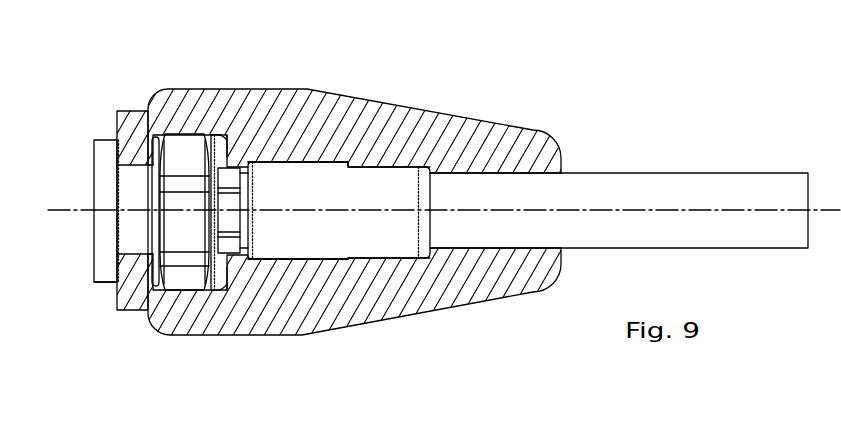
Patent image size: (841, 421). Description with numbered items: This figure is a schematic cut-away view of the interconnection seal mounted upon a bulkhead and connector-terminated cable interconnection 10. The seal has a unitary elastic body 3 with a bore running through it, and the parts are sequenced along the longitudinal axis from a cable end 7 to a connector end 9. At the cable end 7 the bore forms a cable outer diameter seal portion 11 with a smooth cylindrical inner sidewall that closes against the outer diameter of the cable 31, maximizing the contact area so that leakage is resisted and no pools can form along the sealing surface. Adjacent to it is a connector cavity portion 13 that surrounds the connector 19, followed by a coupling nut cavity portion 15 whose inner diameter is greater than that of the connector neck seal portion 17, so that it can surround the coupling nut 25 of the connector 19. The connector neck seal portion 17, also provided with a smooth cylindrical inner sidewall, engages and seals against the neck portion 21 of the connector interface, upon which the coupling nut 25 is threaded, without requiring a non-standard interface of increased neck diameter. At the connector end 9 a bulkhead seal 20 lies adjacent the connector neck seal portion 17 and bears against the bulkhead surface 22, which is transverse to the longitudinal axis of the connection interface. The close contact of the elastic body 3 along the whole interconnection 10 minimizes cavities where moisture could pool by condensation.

The unitary elastic body 3 is at (408, 297).
The cable end 7 is at (588, 157).
The connector end 9 is at (75, 224).
The interconnection 10 is at (178, 212).
The cable outer diameter seal portion 11 is at (498, 170).
The connector cavity portion 13 is at (278, 162).
The coupling nut cavity portion 15 is at (192, 137).
The connector neck seal portion 17 is at (135, 163).
The connector 19 is at (320, 208).
The bulkhead seal 20 is at (117, 272).
The neck portion 21 is at (130, 202).
The bulkhead surface 22 is at (117, 152).
The coupling nut 25 is at (187, 272).
The cable 31 is at (658, 210).